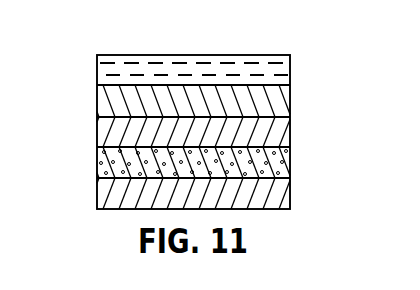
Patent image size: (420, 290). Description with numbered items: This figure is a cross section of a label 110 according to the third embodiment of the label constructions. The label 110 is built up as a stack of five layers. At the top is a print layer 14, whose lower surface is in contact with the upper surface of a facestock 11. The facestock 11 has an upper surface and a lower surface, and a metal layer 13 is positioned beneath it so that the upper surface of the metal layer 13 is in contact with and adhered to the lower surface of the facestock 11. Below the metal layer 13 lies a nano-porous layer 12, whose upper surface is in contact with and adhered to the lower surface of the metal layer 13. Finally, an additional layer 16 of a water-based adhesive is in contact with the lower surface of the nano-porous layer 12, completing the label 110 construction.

The label 110 is at (199, 111).
The print layer 14 is at (290, 66).
The facestock 11 is at (290, 100).
The metal layer 13 is at (290, 133).
The nano-porous layer 12 is at (290, 163).
The water-based adhesive layer 16 is at (290, 198).